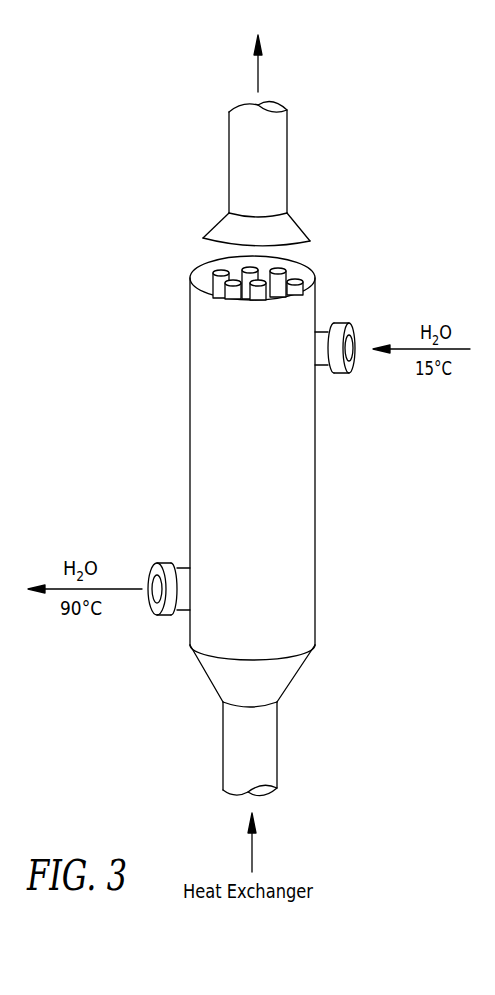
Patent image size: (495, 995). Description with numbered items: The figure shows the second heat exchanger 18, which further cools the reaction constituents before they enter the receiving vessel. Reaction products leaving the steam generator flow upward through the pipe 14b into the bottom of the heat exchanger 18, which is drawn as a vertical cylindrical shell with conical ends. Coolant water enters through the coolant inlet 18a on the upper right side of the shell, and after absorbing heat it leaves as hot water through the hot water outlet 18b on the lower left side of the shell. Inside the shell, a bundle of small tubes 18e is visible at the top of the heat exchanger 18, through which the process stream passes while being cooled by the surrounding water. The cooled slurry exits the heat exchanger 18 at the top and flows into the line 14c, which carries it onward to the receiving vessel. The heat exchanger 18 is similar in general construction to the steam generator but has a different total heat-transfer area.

The pipe 14b is at (270, 749).
The line 14c is at (283, 165).
The second heat exchanger 18 is at (307, 520).
The coolant inlet 18a is at (342, 376).
The hot water outlet 18b is at (165, 563).
The heat exchanger tubes 18e is at (298, 280).